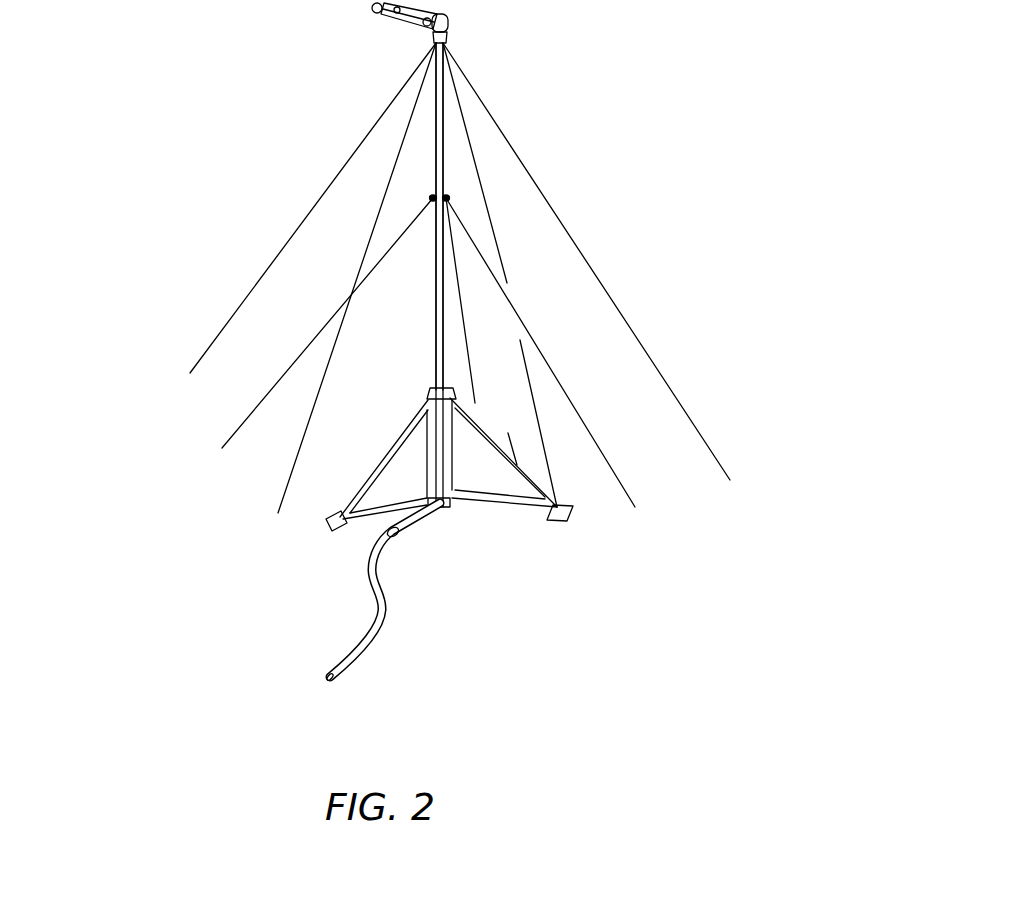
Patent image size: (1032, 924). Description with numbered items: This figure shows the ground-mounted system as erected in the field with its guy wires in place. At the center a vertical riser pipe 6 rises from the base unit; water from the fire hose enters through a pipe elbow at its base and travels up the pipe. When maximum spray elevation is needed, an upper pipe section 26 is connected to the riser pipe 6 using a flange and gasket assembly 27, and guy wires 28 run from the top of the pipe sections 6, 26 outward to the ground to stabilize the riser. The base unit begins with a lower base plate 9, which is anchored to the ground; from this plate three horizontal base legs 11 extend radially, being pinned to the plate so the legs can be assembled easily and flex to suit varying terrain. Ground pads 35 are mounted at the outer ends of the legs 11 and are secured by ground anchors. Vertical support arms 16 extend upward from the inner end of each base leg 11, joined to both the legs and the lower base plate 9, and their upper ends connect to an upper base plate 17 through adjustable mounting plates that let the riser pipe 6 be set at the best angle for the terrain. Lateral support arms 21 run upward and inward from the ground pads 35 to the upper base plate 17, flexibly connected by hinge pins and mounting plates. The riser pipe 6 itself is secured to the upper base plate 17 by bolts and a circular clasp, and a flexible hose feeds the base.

The vertical riser pipe 6 is at (436, 337).
The lower base plate 9 is at (453, 504).
The horizontal base legs 11 is at (497, 527).
The vertical support arms 16 is at (426, 482).
The upper base plate 17 is at (430, 396).
The lateral support arms 21 is at (371, 472).
The upper pipe section 26 is at (447, 122).
The flange and gasket assembly 27 is at (447, 180).
The guy wires 28 is at (238, 308).
The ground pads 35 is at (568, 521).